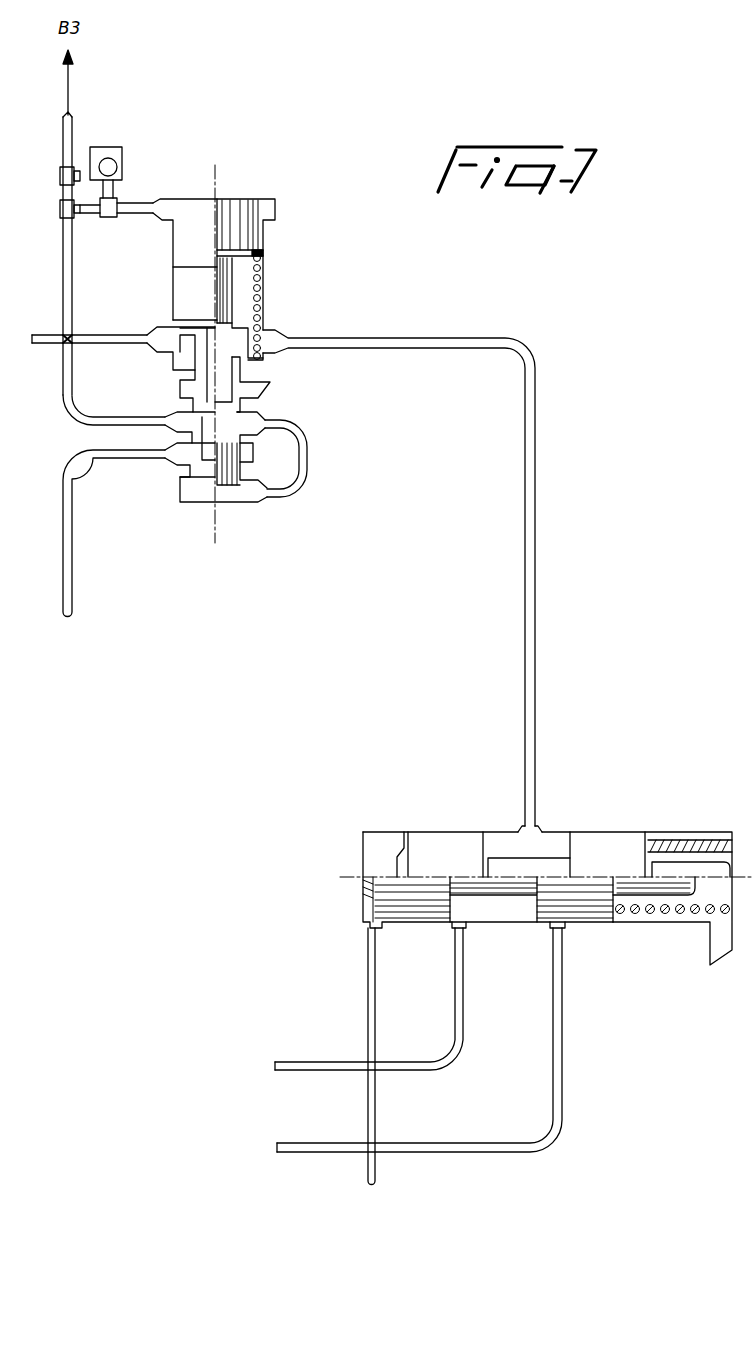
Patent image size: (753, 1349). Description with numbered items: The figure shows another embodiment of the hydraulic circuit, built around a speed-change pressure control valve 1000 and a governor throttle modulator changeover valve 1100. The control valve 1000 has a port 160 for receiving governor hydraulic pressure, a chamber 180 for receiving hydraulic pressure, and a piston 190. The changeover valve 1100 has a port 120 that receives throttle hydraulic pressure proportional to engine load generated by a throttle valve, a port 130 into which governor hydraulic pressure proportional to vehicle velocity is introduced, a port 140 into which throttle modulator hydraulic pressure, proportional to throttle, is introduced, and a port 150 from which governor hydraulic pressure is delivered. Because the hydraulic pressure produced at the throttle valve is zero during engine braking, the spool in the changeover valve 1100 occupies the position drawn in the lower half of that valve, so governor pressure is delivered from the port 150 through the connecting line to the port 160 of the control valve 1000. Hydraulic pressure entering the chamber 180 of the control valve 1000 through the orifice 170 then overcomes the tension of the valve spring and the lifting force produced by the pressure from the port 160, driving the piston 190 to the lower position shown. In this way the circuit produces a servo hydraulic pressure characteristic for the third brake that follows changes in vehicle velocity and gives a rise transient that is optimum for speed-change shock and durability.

The port 120 is at (368, 926).
The port 130 is at (460, 926).
The port 140 is at (560, 926).
The port 150 is at (519, 827).
The port 160 is at (273, 334).
The orifice 170 is at (92, 212).
The chamber 180 is at (187, 203).
The piston 190 is at (190, 300).
The speed-change pressure control valve 1000 is at (252, 185).
The governor throttle modulator changeover valve 1100 is at (578, 808).